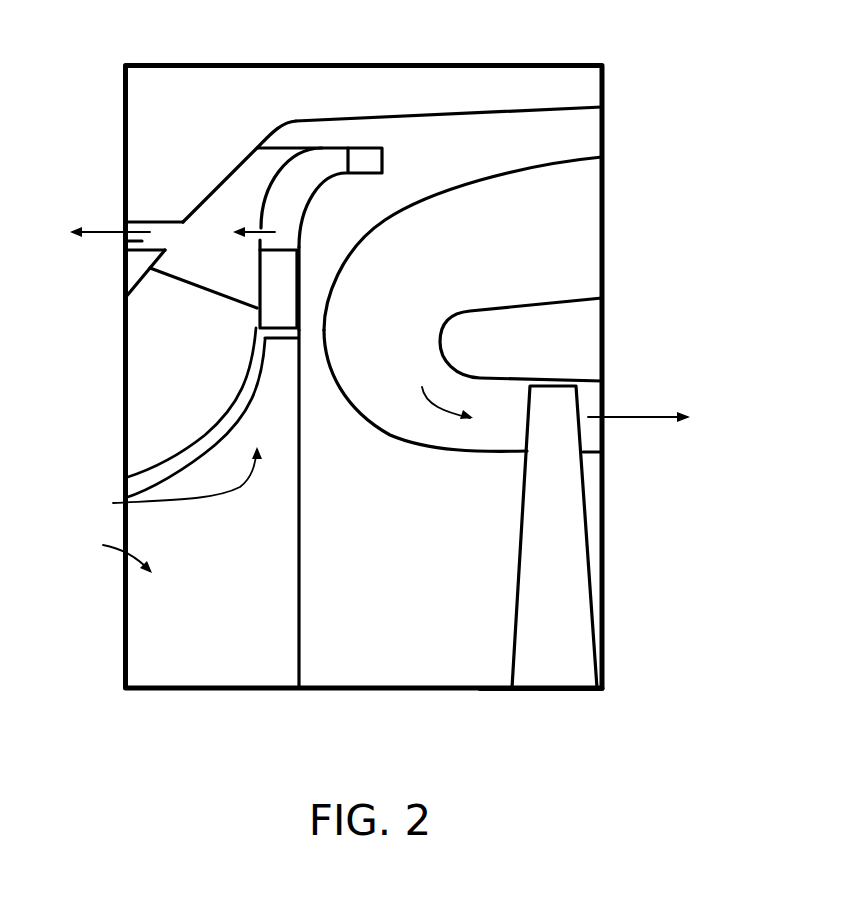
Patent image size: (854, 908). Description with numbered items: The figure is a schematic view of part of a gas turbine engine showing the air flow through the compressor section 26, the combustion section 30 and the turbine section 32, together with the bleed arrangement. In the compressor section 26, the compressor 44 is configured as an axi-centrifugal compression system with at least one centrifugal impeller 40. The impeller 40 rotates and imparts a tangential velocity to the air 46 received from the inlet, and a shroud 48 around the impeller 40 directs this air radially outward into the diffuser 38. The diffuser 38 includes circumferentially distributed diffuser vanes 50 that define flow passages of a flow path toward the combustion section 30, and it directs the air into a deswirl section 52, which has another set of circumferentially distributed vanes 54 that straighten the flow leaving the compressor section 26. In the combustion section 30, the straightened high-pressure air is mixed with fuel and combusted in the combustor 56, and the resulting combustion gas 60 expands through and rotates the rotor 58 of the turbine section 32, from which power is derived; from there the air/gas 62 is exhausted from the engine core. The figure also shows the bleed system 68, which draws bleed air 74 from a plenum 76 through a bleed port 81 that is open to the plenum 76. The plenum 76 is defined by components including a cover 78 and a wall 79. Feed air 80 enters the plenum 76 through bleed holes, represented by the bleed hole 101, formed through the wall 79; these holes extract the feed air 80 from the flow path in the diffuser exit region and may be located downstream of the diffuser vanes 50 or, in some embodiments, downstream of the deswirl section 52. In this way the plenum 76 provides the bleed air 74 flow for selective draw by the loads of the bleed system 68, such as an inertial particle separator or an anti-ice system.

The compressor section 26 is at (191, 697).
The combustion section 30 is at (568, 218).
The turbine section 32 is at (549, 696).
The diffuser 38 is at (306, 297).
The centrifugal impeller 40 is at (222, 592).
The compressor 44 is at (107, 554).
The air 46 is at (243, 492).
The shroud 48 is at (240, 403).
The diffuser vanes 50 is at (285, 287).
The deswirl section 52 is at (348, 137).
The vanes 54 is at (366, 161).
The combustor 56 is at (462, 269).
The rotor 58 is at (515, 613).
The combustion gas 60 is at (422, 387).
The air/gas 62 is at (668, 412).
The bleed system 68 is at (140, 218).
The bleed air 74 is at (110, 230).
The plenum 76 is at (235, 282).
The cover 78 is at (207, 188).
The wall 79 is at (258, 283).
The feed air 80 is at (258, 230).
The bleed port 81 is at (123, 245).
The bleed hole 101 is at (262, 230).